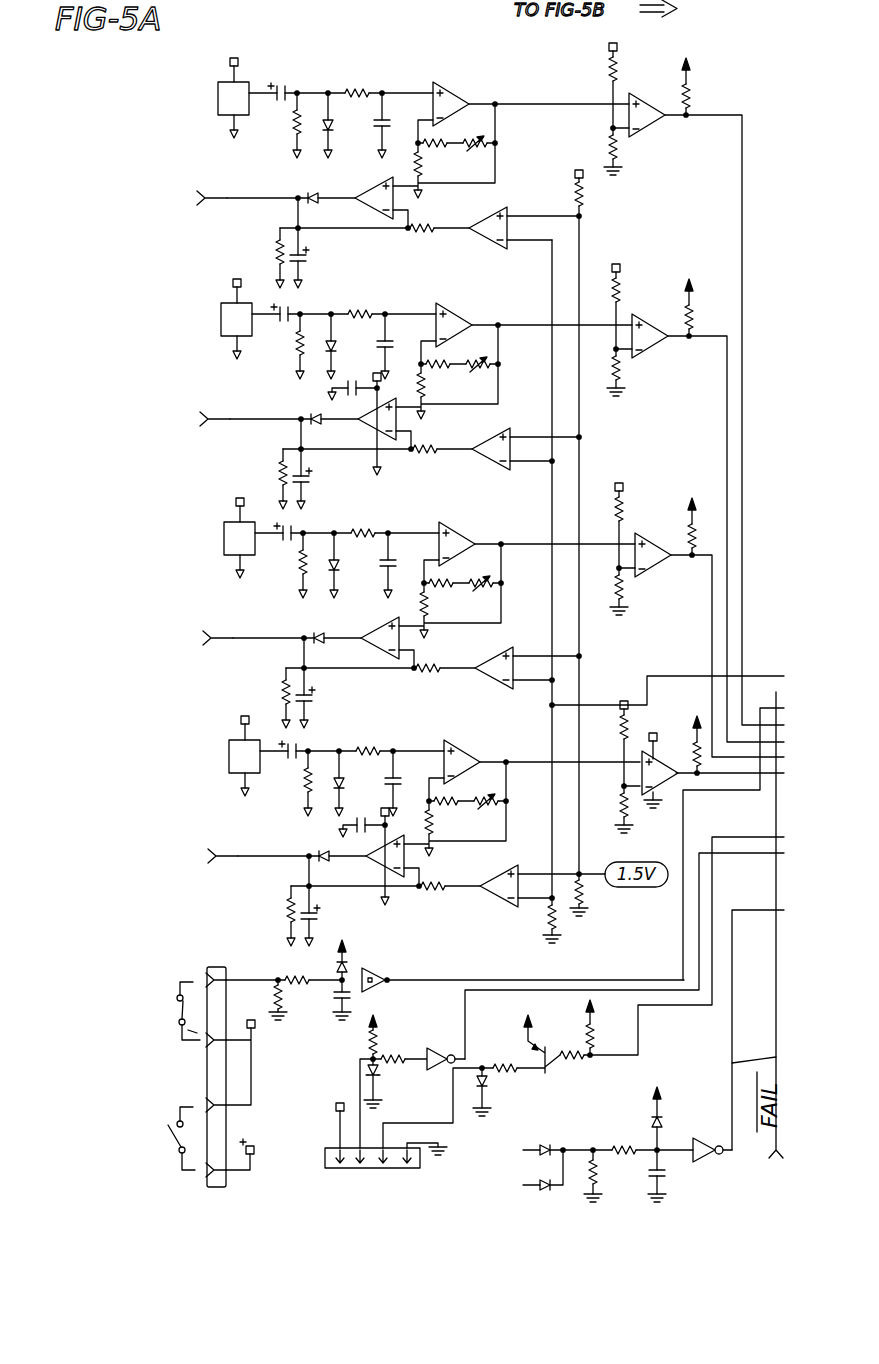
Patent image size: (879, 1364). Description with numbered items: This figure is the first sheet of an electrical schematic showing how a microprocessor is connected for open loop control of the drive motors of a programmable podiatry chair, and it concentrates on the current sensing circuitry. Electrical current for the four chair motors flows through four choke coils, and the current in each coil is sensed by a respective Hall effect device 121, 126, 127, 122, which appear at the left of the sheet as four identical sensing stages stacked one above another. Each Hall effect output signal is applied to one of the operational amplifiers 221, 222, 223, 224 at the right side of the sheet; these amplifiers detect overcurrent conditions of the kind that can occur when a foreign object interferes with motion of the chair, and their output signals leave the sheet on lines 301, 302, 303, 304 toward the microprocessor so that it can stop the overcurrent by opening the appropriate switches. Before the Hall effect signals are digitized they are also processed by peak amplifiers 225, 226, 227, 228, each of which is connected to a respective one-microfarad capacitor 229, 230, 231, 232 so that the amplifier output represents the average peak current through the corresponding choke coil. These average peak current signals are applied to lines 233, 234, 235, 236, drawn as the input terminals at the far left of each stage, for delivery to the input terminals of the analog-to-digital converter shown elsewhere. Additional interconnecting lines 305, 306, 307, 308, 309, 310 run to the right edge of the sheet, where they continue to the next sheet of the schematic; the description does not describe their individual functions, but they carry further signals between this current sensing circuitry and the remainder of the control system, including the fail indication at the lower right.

The Hall effect device 121 is at (249, 72).
The Hall effect device 126 is at (221, 321).
The Hall effect device 127 is at (226, 542).
The Hall effect device 122 is at (229, 759).
The operational amplifier 221 is at (650, 125).
The operational amplifier 222 is at (640, 339).
The operational amplifier 223 is at (637, 565).
The operational amplifier 224 is at (655, 767).
The peak amplifier 225 is at (420, 194).
The peak amplifier 226 is at (420, 415).
The peak amplifier 227 is at (423, 635).
The peak amplifier 228 is at (432, 853).
The one-microfarad capacitor 229 is at (315, 257).
The one-microfarad capacitor 230 is at (316, 477).
The one-microfarad capacitor 231 is at (316, 695).
The one-microfarad capacitor 232 is at (326, 913).
The line 233 is at (234, 198).
The line 234 is at (230, 419).
The line 235 is at (270, 636).
The line 236 is at (268, 859).
The output line 301 is at (742, 205).
The output line 302 is at (727, 437).
The output line 303 is at (712, 627).
The output line 304 is at (718, 776).
The signal line 305 is at (684, 932).
The signal line 306 is at (651, 990).
The signal line 307 is at (715, 869).
The signal line 308 is at (732, 1032).
The fail signal line 309 is at (732, 1064).
The reference line 310 is at (701, 676).